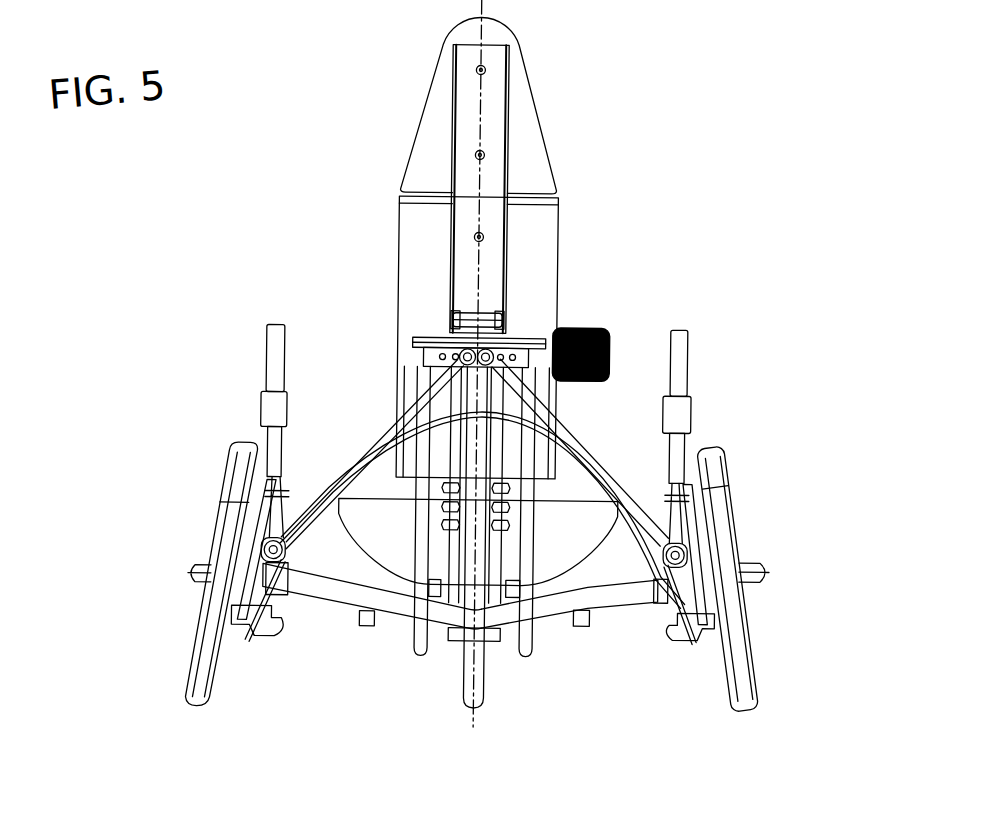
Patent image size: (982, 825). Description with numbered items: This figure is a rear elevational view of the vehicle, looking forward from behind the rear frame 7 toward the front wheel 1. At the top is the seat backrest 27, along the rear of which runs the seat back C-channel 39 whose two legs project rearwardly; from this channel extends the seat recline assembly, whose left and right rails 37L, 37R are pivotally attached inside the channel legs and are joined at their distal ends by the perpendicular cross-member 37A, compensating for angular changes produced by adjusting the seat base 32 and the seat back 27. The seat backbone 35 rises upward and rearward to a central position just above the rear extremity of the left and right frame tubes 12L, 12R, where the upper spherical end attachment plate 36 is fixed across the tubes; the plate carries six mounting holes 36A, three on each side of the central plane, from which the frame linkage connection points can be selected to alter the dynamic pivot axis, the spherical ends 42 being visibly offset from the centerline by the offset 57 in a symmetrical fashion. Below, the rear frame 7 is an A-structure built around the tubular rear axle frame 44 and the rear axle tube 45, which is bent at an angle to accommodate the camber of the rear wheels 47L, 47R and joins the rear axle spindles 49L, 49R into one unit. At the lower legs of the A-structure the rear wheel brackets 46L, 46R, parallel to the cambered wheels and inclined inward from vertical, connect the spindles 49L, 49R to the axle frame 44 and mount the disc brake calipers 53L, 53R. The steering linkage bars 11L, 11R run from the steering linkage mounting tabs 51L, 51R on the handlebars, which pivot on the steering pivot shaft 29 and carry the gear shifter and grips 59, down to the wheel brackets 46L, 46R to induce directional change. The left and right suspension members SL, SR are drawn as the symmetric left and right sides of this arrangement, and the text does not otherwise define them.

The front wheel 1 is at (480, 712).
The rear frame 7 is at (307, 598).
The spherically ended link bar (steering), left 11L is at (234, 512).
The spherically ended link bar (steering), right 11R is at (702, 515).
The frame tube, left 12L is at (420, 657).
The frame tube, right 12R is at (531, 657).
The seat backrest 27 is at (542, 222).
The steering pivot shaft 29 is at (358, 620).
The seat base 32 is at (571, 510).
The seat backbone 35 is at (490, 405).
The upper spherical end attachment plate 36 is at (562, 335).
The mounting holes 36A is at (415, 348).
The cross-member of recline assembly 37A is at (464, 316).
The recline assembly rail, left 37L is at (448, 320).
The recline assembly rail, right 37R is at (503, 320).
The seat back C-channel 39 is at (494, 273).
The spherical end (frame) 42 is at (440, 345).
The rear axle frame 44 is at (613, 612).
The rear axle tube 45 is at (402, 620).
The rear wheel bracket, left 46L is at (208, 582).
The rear wheel bracket, right 46R is at (738, 566).
The rear wheel, left 47L is at (200, 707).
The rear wheel, right 47R is at (752, 714).
The rear axle spindle, left 49L is at (291, 612).
The rear axle spindle, right 49R is at (669, 600).
The steering linkage mounting tab, left 51L is at (272, 470).
The steering linkage mounting tab, right 51R is at (668, 468).
The brake caliper, left 53L is at (248, 646).
The brake caliper, right 53R is at (706, 645).
The offset from centerline 57 is at (469, 368).
The gear shifter and grips 59 is at (272, 340).
The left suspension strut SL is at (384, 438).
The right suspension strut SR is at (586, 455).